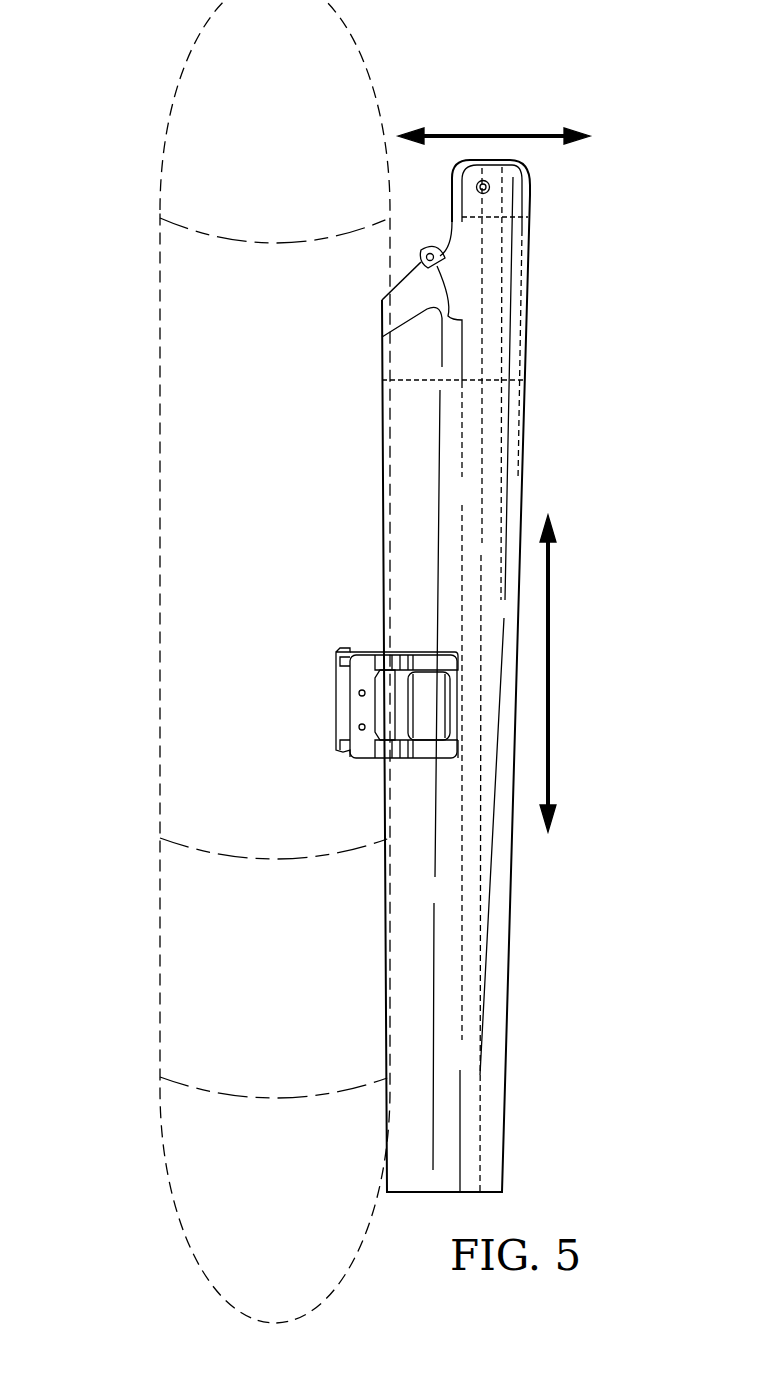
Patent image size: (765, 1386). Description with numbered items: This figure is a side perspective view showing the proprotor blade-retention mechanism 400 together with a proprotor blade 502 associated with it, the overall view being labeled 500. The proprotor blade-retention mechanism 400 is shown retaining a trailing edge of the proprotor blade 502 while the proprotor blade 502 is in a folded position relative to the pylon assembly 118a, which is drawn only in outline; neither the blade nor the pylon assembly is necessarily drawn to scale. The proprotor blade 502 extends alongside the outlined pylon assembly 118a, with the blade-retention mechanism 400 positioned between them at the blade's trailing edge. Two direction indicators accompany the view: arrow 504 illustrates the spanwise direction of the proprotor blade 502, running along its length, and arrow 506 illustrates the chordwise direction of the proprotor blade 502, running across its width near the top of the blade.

The pylon assembly 118a is at (160, 320).
The mounting assembly 500 is at (573, 72).
The proprotor blade 502 is at (381, 442).
The proprotor blade-retention mechanism 400 is at (331, 700).
The arrow 504 is at (550, 675).
The arrow 506 is at (494, 136).